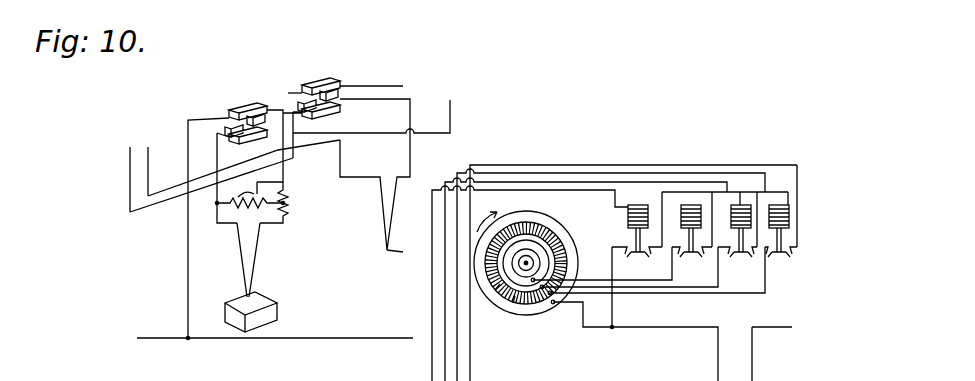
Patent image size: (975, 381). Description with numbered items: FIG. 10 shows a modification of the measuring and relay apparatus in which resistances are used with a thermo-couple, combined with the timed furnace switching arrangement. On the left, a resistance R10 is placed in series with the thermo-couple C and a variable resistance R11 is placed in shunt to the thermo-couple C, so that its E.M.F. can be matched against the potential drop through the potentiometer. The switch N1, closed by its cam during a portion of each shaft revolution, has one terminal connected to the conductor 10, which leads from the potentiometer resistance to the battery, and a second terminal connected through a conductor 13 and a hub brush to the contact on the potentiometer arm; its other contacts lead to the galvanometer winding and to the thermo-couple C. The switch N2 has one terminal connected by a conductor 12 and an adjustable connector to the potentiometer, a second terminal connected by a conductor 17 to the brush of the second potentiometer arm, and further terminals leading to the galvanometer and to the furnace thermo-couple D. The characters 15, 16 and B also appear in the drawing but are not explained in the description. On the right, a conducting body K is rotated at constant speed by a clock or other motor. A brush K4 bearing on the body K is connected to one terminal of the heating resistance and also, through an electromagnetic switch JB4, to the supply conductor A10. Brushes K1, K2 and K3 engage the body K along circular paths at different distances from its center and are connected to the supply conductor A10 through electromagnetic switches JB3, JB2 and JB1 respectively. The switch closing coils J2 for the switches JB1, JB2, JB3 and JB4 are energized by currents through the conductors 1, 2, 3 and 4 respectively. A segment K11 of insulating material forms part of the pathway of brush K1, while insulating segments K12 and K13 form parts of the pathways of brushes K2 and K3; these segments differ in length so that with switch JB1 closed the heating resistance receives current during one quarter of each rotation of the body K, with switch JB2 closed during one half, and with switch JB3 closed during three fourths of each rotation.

The conductor 1 is at (627, 165).
The conductor 2 is at (598, 173).
The control conductor 3 is at (555, 182).
The conductor 4 is at (517, 190).
The conductor 10 is at (165, 329).
The conductor 12 is at (288, 93).
The conductor 13 is at (450, 122).
The conductor 15 is at (150, 160).
The contact bar 16 is at (157, 208).
The conductor 17 is at (398, 86).
The switch N1 is at (235, 105).
The switch N2 is at (331, 78).
The resistance R10 is at (286, 211).
The variable resistance R11 is at (236, 207).
The block B is at (232, 313).
The thermo-couple C is at (252, 291).
The furnace thermo-couple D is at (377, 181).
The supply conductor A10 is at (794, 164).
The conducting body K is at (566, 228).
The segment of insulating material K11 is at (528, 240).
The insulating segment K12 is at (495, 290).
The insulating segment K13 is at (513, 303).
The brush K1 is at (533, 303).
The brush K2 is at (540, 300).
The brush K3 is at (549, 302).
The brush K4 is at (556, 305).
The switch closing coil J2 is at (683, 216).
The electromagnetic switch JB1 is at (779, 258).
The electromagnetic switch JB2 is at (741, 258).
The electromagnetic switch JB3 is at (691, 258).
The electromagnetic switch JB4 is at (638, 258).